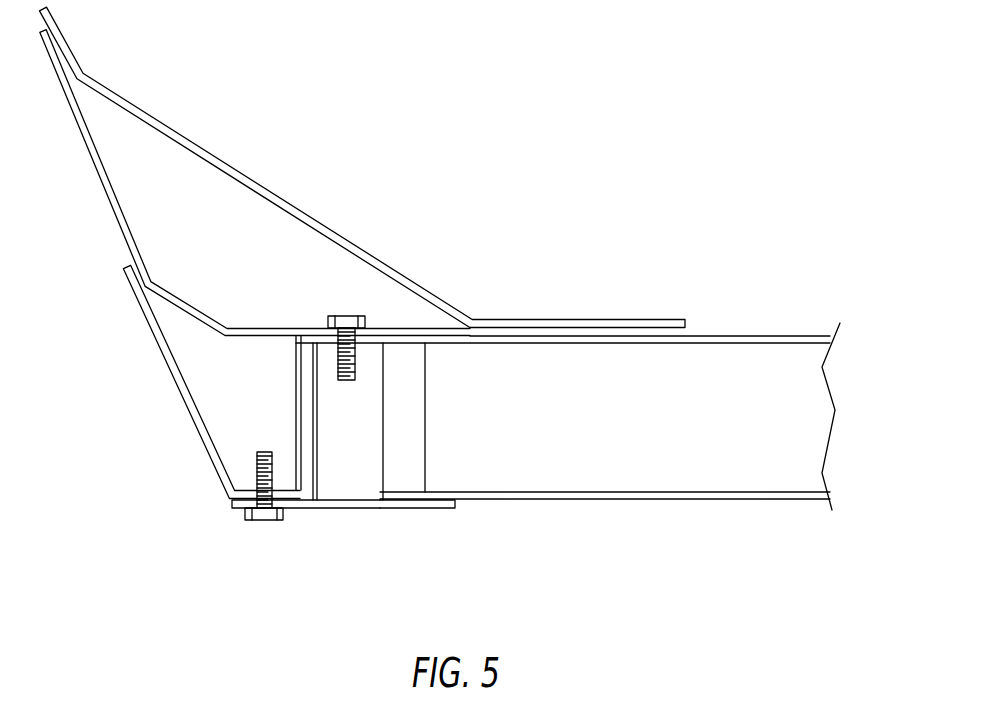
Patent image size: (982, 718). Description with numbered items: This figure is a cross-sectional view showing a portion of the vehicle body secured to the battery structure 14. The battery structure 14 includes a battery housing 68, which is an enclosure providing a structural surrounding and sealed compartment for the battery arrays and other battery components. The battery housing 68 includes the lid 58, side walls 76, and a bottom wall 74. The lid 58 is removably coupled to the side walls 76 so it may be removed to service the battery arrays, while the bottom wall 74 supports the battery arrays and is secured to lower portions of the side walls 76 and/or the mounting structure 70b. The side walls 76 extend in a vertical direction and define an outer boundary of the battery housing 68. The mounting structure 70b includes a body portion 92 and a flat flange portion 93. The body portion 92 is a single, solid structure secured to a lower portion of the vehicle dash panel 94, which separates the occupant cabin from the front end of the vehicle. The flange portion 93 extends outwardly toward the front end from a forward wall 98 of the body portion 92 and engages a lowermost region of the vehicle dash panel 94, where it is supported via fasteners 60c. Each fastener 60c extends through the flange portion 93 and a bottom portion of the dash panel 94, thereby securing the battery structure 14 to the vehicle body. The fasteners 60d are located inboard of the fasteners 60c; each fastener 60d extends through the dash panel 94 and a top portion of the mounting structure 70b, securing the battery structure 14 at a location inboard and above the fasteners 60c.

The battery structure 14 is at (853, 398).
The lid 58 is at (801, 334).
The fasteners 60c is at (253, 522).
The fasteners 60d is at (353, 303).
The battery housing 68 is at (655, 500).
The mounting structure 70b is at (347, 525).
The bottom wall 74 is at (775, 496).
The side walls 76 is at (413, 418).
The body portion 92 is at (370, 500).
The flange portion 93 is at (293, 503).
The vehicle dash panel 94 is at (70, 143).
The forward wall 98 is at (316, 420).